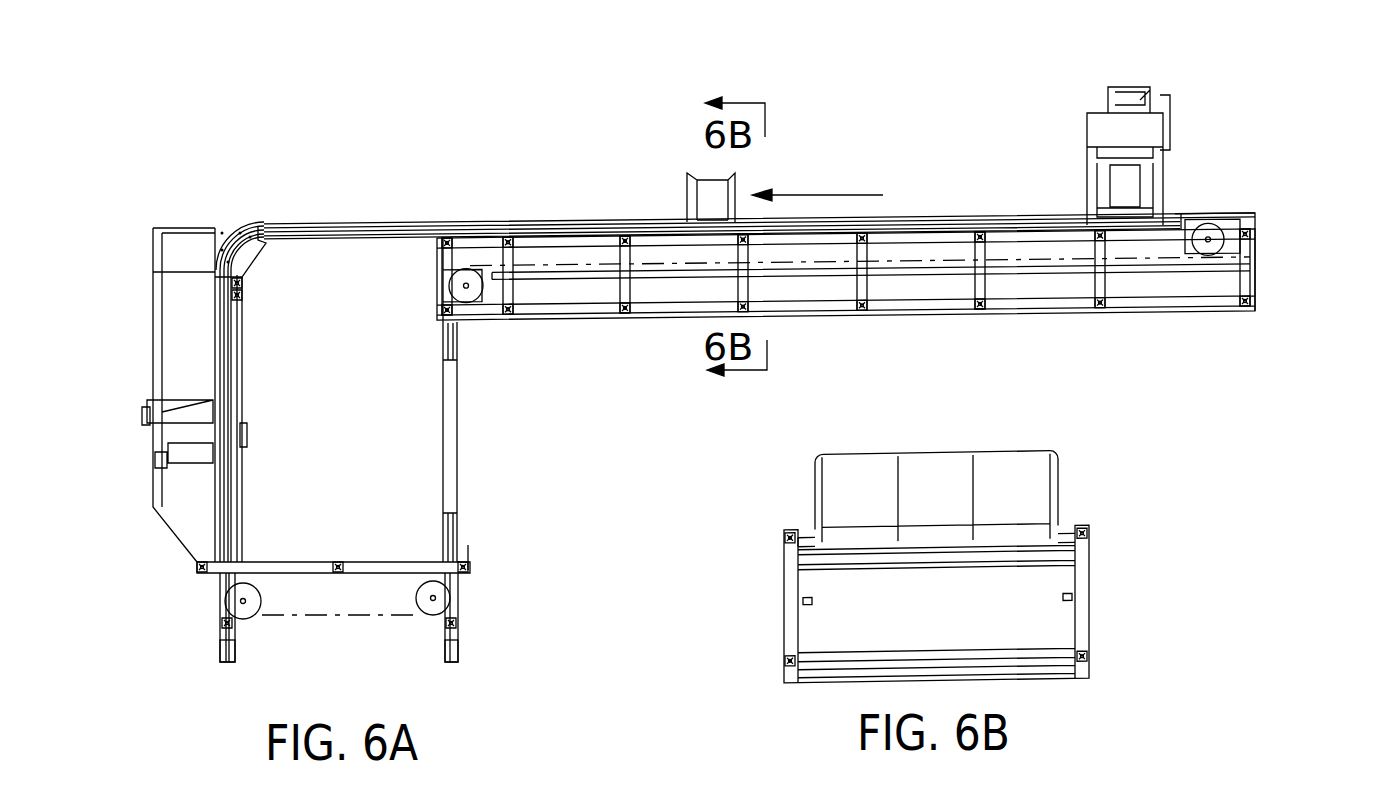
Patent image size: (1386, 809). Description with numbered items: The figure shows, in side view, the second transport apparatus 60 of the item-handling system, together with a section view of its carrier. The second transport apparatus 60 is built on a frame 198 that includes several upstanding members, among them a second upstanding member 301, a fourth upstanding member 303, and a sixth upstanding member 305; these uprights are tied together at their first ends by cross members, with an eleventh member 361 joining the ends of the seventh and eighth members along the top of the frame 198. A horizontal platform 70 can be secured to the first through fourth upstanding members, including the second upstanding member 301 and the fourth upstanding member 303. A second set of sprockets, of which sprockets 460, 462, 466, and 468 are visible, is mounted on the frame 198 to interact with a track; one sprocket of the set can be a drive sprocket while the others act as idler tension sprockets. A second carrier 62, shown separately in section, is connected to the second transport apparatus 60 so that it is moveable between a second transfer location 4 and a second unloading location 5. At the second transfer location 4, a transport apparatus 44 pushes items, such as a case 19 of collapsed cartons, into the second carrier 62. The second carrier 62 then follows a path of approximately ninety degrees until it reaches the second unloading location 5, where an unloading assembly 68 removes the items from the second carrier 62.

In FIG. 6A, the second transport apparatus 60 is at (548, 108).
In FIG. 6A, the eleventh member 361 is at (596, 225).
In FIG. 6A, the case 19 is at (742, 182).
In FIG. 6A, the transport apparatus 44 is at (1147, 100).
In FIG. 6A, the unloading assembly 68 is at (153, 355).
In FIG. 6A, the second transfer location 4 is at (1077, 200).
In FIG. 6A, the sixth upstanding member 305 is at (1258, 278).
In FIG. 6A, the sprocket 468 is at (1208, 265).
In FIG. 6A, the frame 198 is at (928, 330).
In FIG. 6A, the sprocket 466 is at (478, 302).
In FIG. 6A, the second unloading location 5 is at (192, 496).
In FIG. 6A, the fourth upstanding member 303 is at (460, 503).
In FIG. 6A, the horizontal platform 70 is at (455, 590).
In FIG. 6A, the second upstanding member 301 is at (222, 580).
In FIG. 6A, the sprocket 460 is at (262, 614).
In FIG. 6A, the sprocket 462 is at (428, 612).
In FIG. 6B, the second carrier 62 is at (1060, 476).